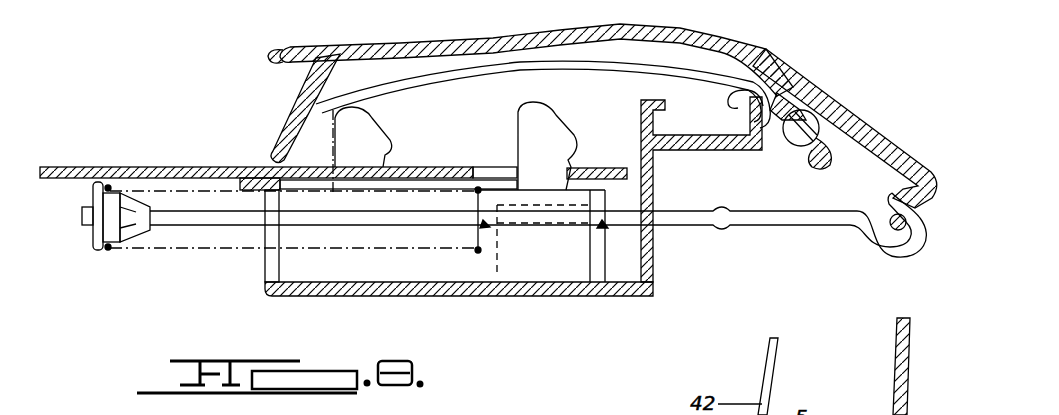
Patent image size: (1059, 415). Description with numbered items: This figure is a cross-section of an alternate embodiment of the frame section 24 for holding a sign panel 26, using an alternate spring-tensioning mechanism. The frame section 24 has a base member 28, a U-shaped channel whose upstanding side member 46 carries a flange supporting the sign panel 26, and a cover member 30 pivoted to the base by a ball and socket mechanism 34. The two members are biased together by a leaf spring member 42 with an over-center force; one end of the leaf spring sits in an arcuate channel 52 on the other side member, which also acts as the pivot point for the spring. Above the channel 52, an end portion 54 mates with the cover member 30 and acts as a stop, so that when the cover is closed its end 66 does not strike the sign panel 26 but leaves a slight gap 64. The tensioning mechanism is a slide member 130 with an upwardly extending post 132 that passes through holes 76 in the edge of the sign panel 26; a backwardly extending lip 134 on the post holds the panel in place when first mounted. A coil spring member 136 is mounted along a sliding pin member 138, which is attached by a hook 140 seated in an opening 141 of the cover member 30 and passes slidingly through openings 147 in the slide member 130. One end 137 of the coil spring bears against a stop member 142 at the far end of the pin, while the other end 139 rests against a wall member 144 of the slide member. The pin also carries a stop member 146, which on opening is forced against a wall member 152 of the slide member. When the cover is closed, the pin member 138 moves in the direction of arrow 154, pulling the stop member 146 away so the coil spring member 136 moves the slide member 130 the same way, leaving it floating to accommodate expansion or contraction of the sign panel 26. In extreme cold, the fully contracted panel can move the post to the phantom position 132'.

The frame section 24 is at (226, 79).
The sign panel 26 is at (66, 165).
The base member 28 is at (415, 285).
The cover member 30 is at (447, 40).
The ball and socket mechanism 34 is at (828, 108).
The leaf spring member 42 is at (668, 74).
The side member 46 is at (266, 267).
The channel 52 is at (790, 78).
The end portion 54 is at (778, 56).
The gap 64 is at (248, 155).
The end of cover member 66 is at (272, 157).
The holes 76 is at (470, 166).
The slide member 130 is at (560, 277).
The post 132 is at (559, 133).
The post in phantom position 132' is at (393, 136).
The lip 134 is at (578, 150).
The coil spring member 136 is at (312, 240).
The end of coil spring member 137 is at (110, 253).
The sliding pin member 138 is at (205, 224).
The other end of spring member 139 is at (478, 266).
The hook 140 is at (898, 250).
The opening 141 is at (912, 186).
The stop member 142 is at (103, 250).
The wall member 144 is at (492, 292).
The stop member 146 is at (738, 234).
The openings 147 is at (482, 223).
The wall member 152 is at (588, 292).
The arrow 154 is at (808, 197).